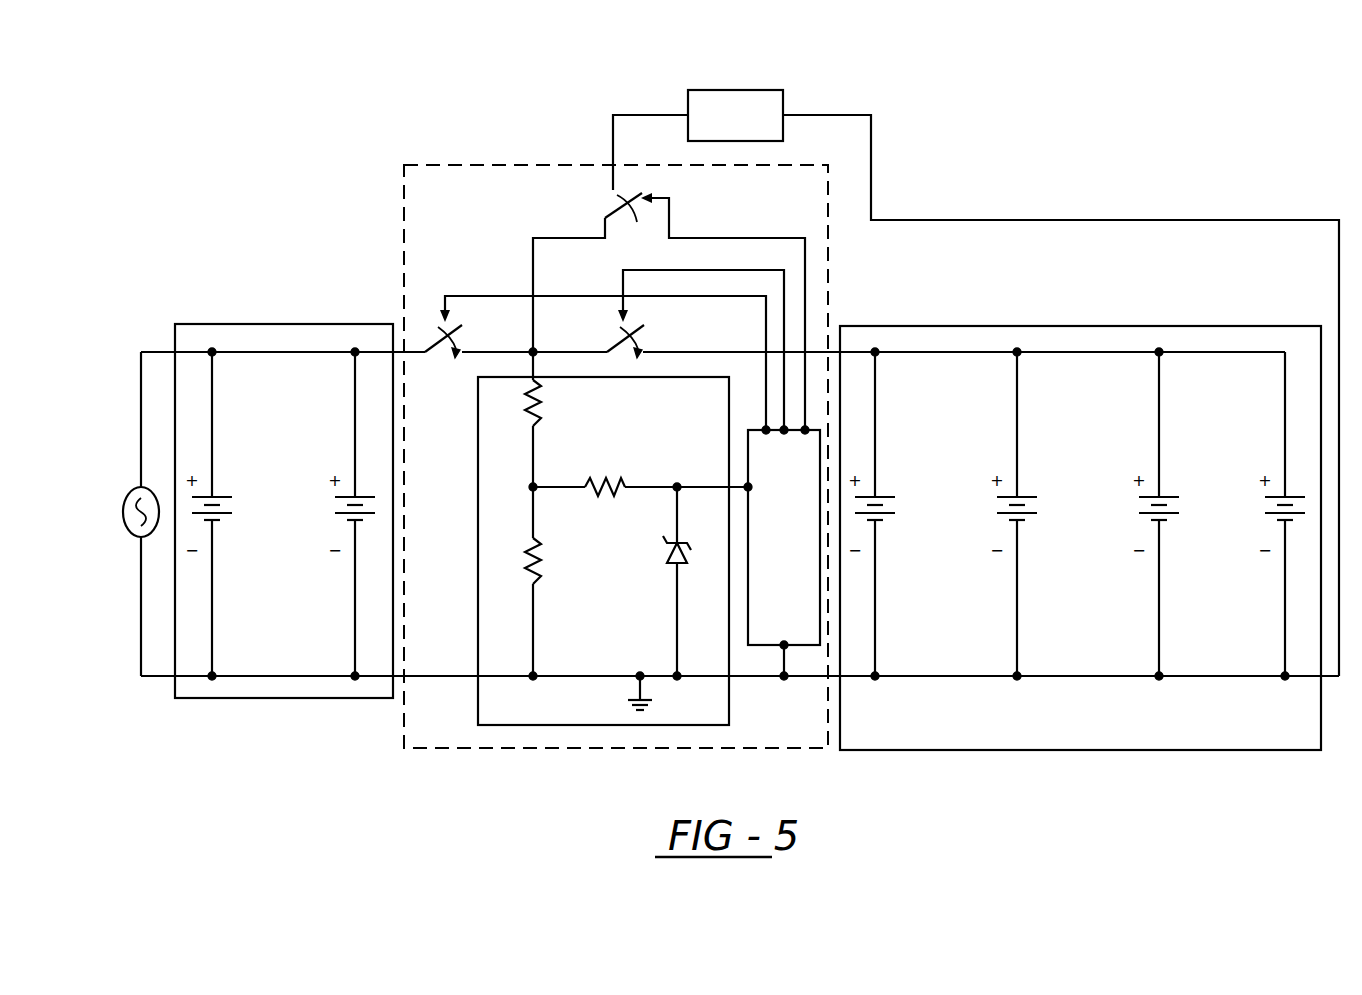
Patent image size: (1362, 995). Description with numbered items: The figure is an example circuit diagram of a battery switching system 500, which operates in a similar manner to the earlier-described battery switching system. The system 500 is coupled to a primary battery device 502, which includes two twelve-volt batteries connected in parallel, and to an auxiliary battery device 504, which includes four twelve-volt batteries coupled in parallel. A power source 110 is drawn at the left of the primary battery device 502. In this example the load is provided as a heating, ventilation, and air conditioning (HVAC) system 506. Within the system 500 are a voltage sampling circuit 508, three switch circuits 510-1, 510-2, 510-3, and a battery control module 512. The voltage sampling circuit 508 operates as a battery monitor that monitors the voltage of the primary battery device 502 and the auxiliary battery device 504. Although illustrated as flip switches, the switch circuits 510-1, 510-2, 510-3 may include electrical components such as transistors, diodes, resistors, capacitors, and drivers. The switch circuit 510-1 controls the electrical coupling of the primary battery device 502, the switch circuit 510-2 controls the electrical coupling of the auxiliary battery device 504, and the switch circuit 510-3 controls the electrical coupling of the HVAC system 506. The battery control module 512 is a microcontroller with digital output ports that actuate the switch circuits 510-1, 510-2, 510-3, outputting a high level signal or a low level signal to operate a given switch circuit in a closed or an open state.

The power source 110 is at (124, 498).
The battery switching system 500 is at (538, 165).
The primary battery device 502 is at (322, 324).
The auxiliary battery device 504 is at (1005, 326).
The heating, ventilation, and air conditioning (HVAC) system 506 is at (755, 90).
The voltage sampling circuit 508 is at (604, 725).
The switch circuit 510-1 is at (440, 360).
The switch circuit 510-2 is at (650, 337).
The switch circuit 510-3 is at (603, 200).
The battery control module 512 is at (806, 547).